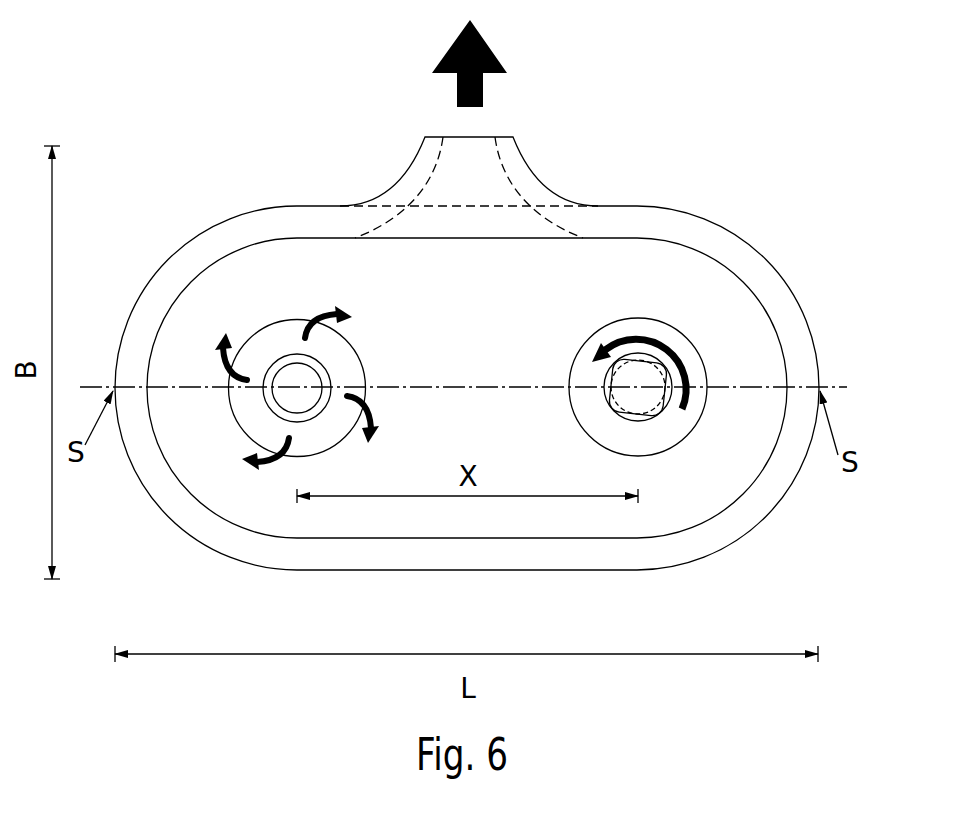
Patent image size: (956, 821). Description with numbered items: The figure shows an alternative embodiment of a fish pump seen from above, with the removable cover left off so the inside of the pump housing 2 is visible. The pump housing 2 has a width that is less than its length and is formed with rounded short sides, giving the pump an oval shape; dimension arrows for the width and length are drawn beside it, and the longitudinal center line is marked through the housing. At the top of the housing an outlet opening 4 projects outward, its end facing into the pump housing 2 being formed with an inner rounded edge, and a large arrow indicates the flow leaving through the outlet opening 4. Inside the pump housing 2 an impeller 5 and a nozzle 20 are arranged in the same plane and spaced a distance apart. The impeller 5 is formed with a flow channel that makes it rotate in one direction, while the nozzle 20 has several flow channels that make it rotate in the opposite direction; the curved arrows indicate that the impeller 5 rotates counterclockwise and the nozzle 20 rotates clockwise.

The pump housing 2 is at (697, 535).
The outlet opening 4 is at (460, 158).
The impeller 5 is at (590, 326).
The nozzle 20 is at (362, 347).